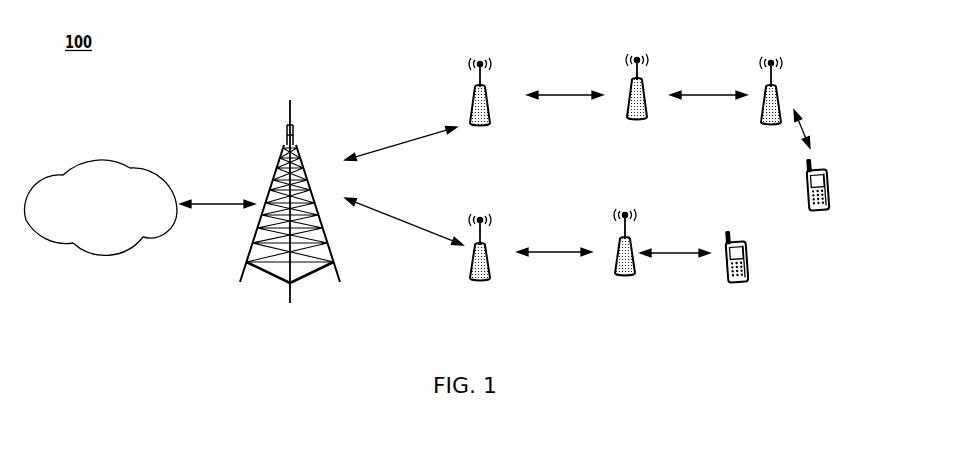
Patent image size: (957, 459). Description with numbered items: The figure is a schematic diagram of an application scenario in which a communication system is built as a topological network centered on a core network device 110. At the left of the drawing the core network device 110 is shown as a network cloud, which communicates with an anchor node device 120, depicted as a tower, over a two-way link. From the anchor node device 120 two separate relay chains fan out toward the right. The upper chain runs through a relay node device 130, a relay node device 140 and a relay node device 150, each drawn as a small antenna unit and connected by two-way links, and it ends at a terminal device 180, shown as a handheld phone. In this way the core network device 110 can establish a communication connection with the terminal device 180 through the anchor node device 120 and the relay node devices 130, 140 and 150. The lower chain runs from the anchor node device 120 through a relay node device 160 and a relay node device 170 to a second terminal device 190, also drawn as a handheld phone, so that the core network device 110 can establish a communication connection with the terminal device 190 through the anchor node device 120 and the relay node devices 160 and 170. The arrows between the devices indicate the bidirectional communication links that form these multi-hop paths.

The core network device 110 is at (110, 163).
The anchor node device 120 is at (295, 121).
The relay node device 130 is at (490, 58).
The relay node device 140 is at (648, 50).
The relay node device 150 is at (782, 56).
The relay node device 160 is at (490, 213).
The relay node device 170 is at (637, 208).
The terminal device 180 is at (831, 181).
The terminal device 190 is at (749, 254).